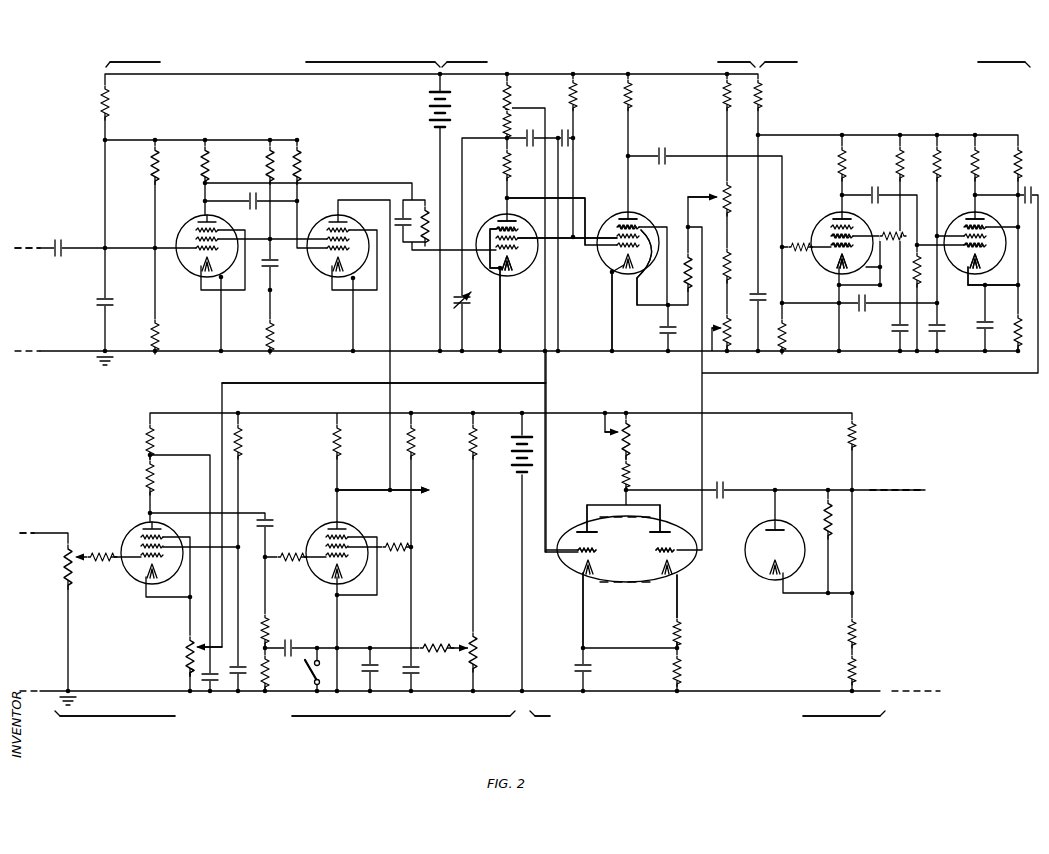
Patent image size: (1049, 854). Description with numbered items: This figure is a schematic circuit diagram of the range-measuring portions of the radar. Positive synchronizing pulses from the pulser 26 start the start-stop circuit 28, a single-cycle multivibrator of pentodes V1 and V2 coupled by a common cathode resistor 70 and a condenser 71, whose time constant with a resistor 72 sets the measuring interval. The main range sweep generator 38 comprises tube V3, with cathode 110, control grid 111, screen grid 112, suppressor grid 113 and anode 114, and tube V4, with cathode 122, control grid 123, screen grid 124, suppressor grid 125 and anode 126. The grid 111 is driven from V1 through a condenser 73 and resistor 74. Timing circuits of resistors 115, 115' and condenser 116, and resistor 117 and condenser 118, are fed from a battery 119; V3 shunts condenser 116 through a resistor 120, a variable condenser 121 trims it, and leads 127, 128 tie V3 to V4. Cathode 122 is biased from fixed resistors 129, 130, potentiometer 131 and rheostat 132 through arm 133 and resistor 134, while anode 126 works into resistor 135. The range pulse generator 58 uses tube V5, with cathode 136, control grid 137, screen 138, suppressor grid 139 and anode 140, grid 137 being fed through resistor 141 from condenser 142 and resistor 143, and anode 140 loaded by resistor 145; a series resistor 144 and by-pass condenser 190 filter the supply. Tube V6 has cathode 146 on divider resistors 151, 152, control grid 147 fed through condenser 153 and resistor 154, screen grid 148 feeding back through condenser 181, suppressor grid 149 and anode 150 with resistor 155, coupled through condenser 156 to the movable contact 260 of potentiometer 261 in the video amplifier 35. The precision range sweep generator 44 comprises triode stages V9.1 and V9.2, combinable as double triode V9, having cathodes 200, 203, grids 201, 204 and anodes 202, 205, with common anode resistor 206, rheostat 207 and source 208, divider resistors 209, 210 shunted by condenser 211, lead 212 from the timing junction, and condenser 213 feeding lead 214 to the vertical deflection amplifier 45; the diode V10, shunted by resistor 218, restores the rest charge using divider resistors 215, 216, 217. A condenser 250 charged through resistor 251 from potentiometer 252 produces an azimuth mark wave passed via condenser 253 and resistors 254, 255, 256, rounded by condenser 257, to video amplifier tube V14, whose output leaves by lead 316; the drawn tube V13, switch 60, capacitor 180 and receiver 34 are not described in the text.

The start-stop circuit 28 is at (248, 55).
The main range sweep generator 38 is at (603, 55).
The range pulse generator 58 is at (908, 55).
The video amplifier 35 is at (235, 751).
The precision range sweep generator 44 is at (685, 751).
The pulser 26 is at (44, 286).
The radio receiver 34 is at (38, 587).
The vertical deflection amplifier 45 is at (914, 539).
The common cathode resistor 70 is at (276, 326).
The condenser 71 is at (250, 200).
The resistor 72 is at (302, 161).
The condenser 73 is at (406, 216).
The resistor 74 is at (428, 218).
The cathode 110 is at (511, 278).
The control grid 111 is at (491, 263).
The screen grid 112 is at (515, 262).
The suppressor grid 113 is at (518, 228).
The anode 114 is at (510, 218).
The resistor 115 is at (489, 98).
The resistor 115' is at (489, 125).
The condenser 116 is at (531, 132).
The resistor 117 is at (577, 92).
The condenser 118 is at (565, 132).
The battery 119 is at (432, 110).
The resistor 120 is at (503, 166).
The variable condenser 121 is at (466, 309).
The cathode 122 is at (613, 272).
The control grid 123 is at (640, 280).
The screen grid 124 is at (643, 260).
The suppressor grid 125 is at (641, 226).
The anode 126 is at (633, 217).
The lead 127 is at (582, 197).
The lead 128 is at (565, 243).
The fixed resistor 129 is at (722, 99).
The fixed resistor 130 is at (731, 268).
The adjustable potentiometer 131 is at (725, 190).
The rheostat 132 is at (731, 332).
The movable arm 133 is at (695, 195).
The resistor 134 is at (673, 326).
The anode circuit resistor 135 is at (632, 92).
The cathode 136 is at (838, 265).
The control grid 137 is at (825, 249).
The screen 138 is at (831, 235).
The suppressor grid 139 is at (855, 226).
The anode 140 is at (836, 214).
The resistor 141 is at (784, 246).
The condenser 142 is at (663, 155).
The resistor 143 is at (788, 331).
The series resistor 144 is at (763, 94).
The anode circuit resistor 145 is at (848, 162).
The cathode 146 is at (985, 284).
The control grid 147 is at (970, 268).
The screen grid 148 is at (965, 253).
The suppressor grid 149 is at (967, 220).
The anode 150 is at (970, 212).
The resistor 151 is at (1015, 172).
The resistor 152 is at (1014, 330).
The condenser 153 is at (874, 190).
The resistor 154 is at (915, 272).
The anode circuit resistor 155 is at (981, 162).
The condenser 156 is at (1021, 193).
The capacitor 180 is at (960, 318).
The condenser 181 is at (859, 308).
The by-pass condenser 190 is at (758, 292).
The cathode 200 is at (585, 576).
The control grid 201 is at (580, 556).
The anode 202 is at (600, 503).
The cathode 203 is at (680, 570).
The control grid 204 is at (680, 554).
The anode 205 is at (657, 510).
The common anode resistor 206 is at (633, 470).
The rheostat 207 is at (633, 432).
The source 208 is at (514, 462).
The resistor 209 is at (684, 636).
The resistor 210 is at (685, 668).
The by-pass condenser 211 is at (593, 669).
The lead 212 is at (546, 370).
The condenser 213 is at (724, 484).
The lead 214 is at (877, 488).
The resistor 215 is at (860, 434).
The resistor 216 is at (861, 630).
The resistor 217 is at (861, 668).
The resistor 218 is at (823, 514).
The condenser 250 is at (372, 645).
The resistor 251 is at (423, 640).
The potentiometer 252 is at (479, 642).
The condenser 253 is at (291, 643).
The resistor 254 is at (270, 676).
The resistor 255 is at (271, 622).
The resistor 256 is at (294, 554).
The condenser 257 is at (279, 508).
The movable contact 260 is at (210, 646).
The potentiometer 261 is at (186, 660).
The lead 316 is at (416, 490).
The switch 60 is at (309, 665).
The pentode V1 is at (192, 222).
The pentode V2 is at (324, 222).
The vacuum tube V3 is at (494, 222).
The vacuum tube V4 is at (622, 220).
The vacuum tube V5 is at (834, 220).
The vacuum tube V6 is at (985, 220).
The double triode V9 is at (636, 568).
The triode stage V9.1 is at (580, 532).
The triode stage V9.2 is at (666, 532).
The diode V10 is at (768, 523).
The vacuum tube V13 is at (142, 530).
The video amplifier tube V14 is at (335, 530).